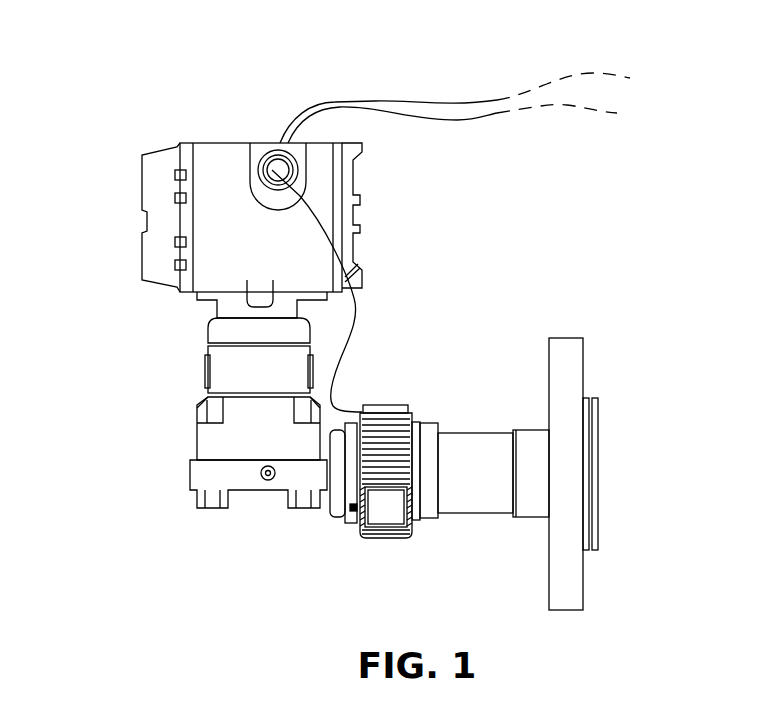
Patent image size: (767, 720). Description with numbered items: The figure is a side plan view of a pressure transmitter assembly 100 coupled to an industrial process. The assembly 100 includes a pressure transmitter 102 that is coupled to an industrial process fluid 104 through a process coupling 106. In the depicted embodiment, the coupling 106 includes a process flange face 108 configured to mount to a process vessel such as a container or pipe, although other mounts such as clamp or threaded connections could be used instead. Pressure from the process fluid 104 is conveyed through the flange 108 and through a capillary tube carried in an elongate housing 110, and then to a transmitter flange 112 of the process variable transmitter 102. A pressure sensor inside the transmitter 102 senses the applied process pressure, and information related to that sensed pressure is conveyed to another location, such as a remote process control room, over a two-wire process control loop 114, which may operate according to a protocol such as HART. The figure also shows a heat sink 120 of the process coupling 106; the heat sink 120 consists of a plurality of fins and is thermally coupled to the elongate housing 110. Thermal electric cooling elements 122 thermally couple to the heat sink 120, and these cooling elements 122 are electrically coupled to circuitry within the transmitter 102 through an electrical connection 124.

The pressure transmitter assembly 100 is at (158, 126).
The pressure transmitter 102 is at (203, 213).
The industrial process fluid 104 is at (618, 473).
The process coupling 106 is at (477, 374).
The process flange face 108 is at (563, 338).
The elongate housing 110 is at (477, 500).
The transmitter flange 112 is at (213, 472).
The two-wire process control loop 114 is at (428, 110).
The heat sink 120 is at (385, 405).
The thermal electric cooling elements 122 is at (387, 517).
The electrical connection 124 is at (355, 302).